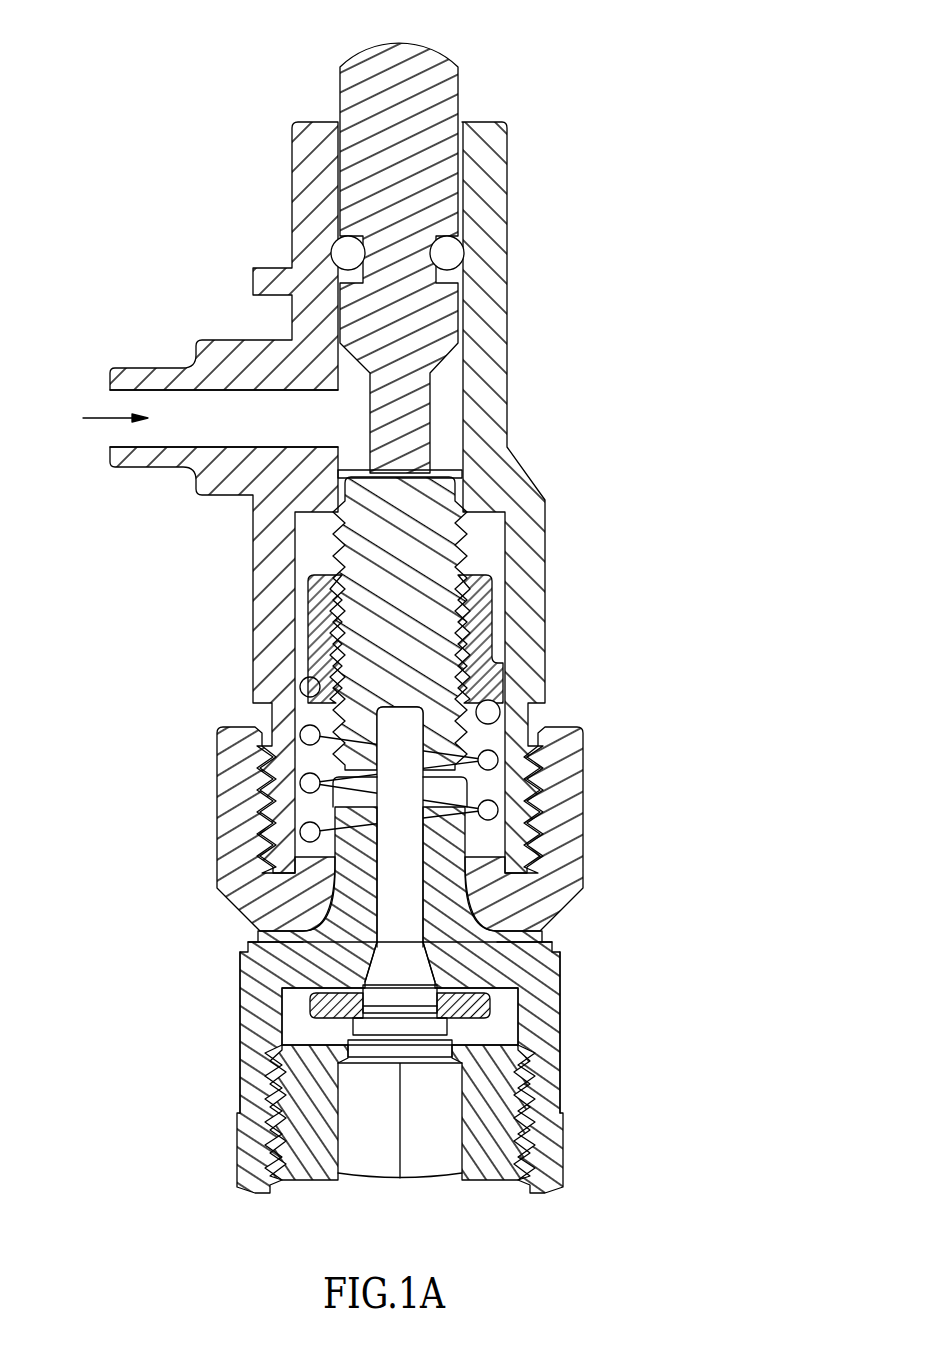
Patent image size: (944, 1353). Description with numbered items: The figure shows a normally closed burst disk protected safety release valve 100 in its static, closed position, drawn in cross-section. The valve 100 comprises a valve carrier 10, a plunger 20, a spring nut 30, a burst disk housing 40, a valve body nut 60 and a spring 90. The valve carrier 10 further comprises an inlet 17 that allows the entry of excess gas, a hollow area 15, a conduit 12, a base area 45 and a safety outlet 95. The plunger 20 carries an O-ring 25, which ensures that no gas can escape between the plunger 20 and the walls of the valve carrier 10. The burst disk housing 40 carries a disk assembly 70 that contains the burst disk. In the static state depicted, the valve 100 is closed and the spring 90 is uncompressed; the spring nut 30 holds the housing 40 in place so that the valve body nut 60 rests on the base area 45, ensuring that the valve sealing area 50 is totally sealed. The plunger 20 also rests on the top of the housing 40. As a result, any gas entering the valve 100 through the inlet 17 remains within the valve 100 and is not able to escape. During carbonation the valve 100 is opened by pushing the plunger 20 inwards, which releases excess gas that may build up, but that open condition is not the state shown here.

The burst disk protected safety release valve 100 is at (640, 48).
The valve carrier 10 is at (493, 167).
The inlet 17 is at (120, 403).
The plunger 20 is at (365, 65).
The O-ring 25 is at (450, 255).
The burst disk housing 40 is at (440, 492).
The spring nut 30 is at (487, 598).
The spring 90 is at (493, 712).
The conduit 12 is at (367, 792).
The hollow area 15 is at (392, 830).
The valve body nut 60 is at (227, 865).
The valve sealing area 50 is at (258, 932).
The base area 45 is at (553, 965).
The disk assembly 70 is at (502, 1028).
The safety outlet 95 is at (422, 1173).